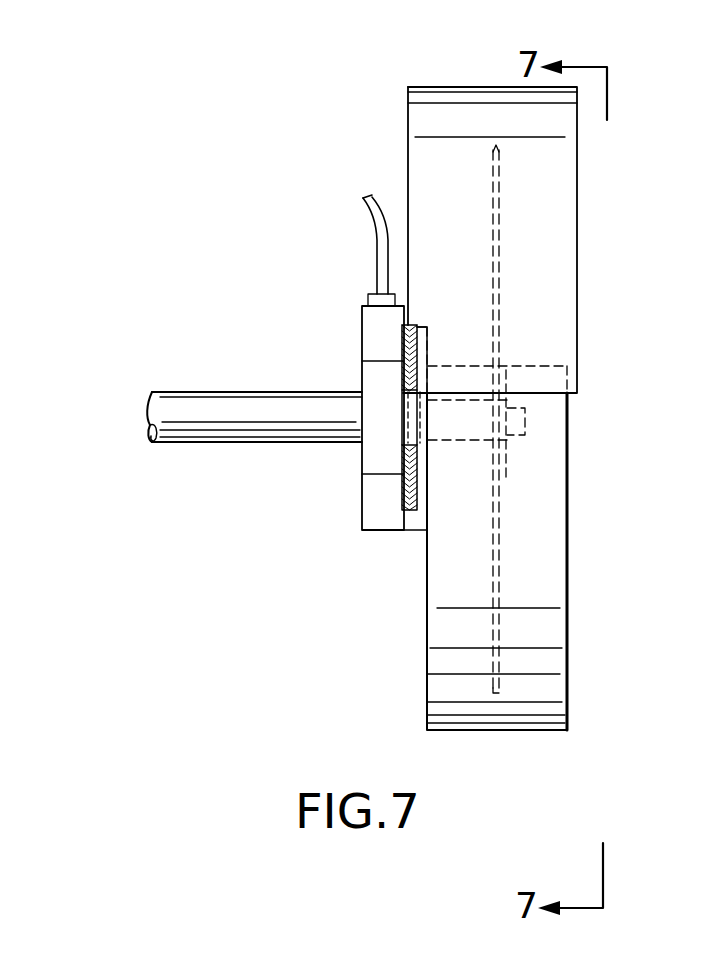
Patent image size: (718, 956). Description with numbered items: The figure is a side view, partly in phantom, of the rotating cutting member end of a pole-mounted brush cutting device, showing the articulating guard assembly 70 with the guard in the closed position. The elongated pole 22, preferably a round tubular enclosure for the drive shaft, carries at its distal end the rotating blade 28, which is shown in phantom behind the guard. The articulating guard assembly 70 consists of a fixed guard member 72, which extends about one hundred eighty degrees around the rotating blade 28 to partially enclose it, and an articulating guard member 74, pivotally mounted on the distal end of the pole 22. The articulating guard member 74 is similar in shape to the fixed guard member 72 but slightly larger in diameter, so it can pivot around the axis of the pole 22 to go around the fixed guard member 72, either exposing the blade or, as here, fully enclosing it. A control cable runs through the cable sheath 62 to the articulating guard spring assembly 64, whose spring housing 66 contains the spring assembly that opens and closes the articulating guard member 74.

The elongated pole 22 is at (273, 430).
The rotating blade 28 is at (502, 647).
The cable sheath 62 is at (383, 200).
The articulating guard spring assembly 64 is at (350, 520).
The spring housing 66 is at (397, 520).
The articulating guard assembly 70 is at (610, 246).
The fixed guard member 72 is at (567, 563).
The articulating guard member 74 is at (463, 100).